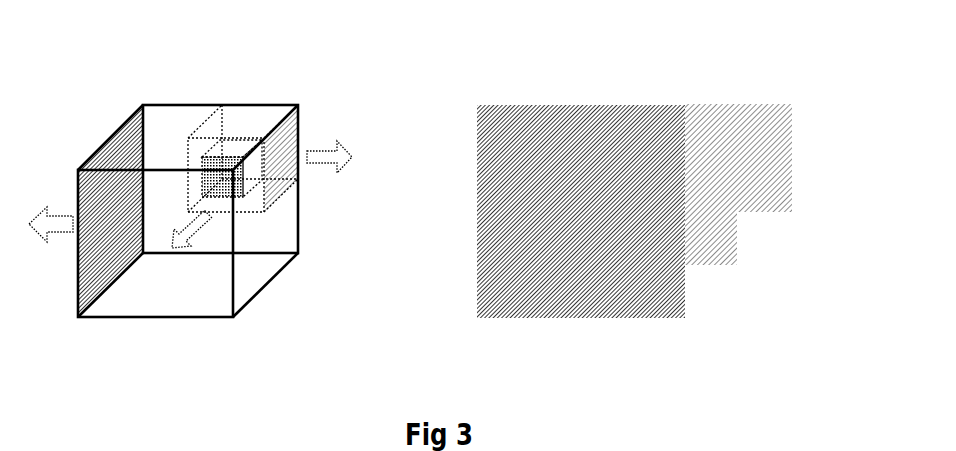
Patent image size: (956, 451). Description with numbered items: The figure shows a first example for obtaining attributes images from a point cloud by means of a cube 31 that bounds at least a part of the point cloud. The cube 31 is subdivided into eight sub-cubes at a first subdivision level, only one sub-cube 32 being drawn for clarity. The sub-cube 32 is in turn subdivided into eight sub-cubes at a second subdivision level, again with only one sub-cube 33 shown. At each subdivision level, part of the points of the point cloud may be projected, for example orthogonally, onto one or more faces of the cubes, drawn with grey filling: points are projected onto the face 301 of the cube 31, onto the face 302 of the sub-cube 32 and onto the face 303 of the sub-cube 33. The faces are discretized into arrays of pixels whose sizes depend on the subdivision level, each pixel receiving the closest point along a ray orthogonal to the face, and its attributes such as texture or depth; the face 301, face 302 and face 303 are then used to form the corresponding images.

The cube 31 is at (147, 314).
The sub-cube 32 is at (200, 126).
The sub-cube 33 is at (249, 186).
The face 301 is at (487, 167).
The face 302 is at (752, 125).
The face 303 is at (728, 253).